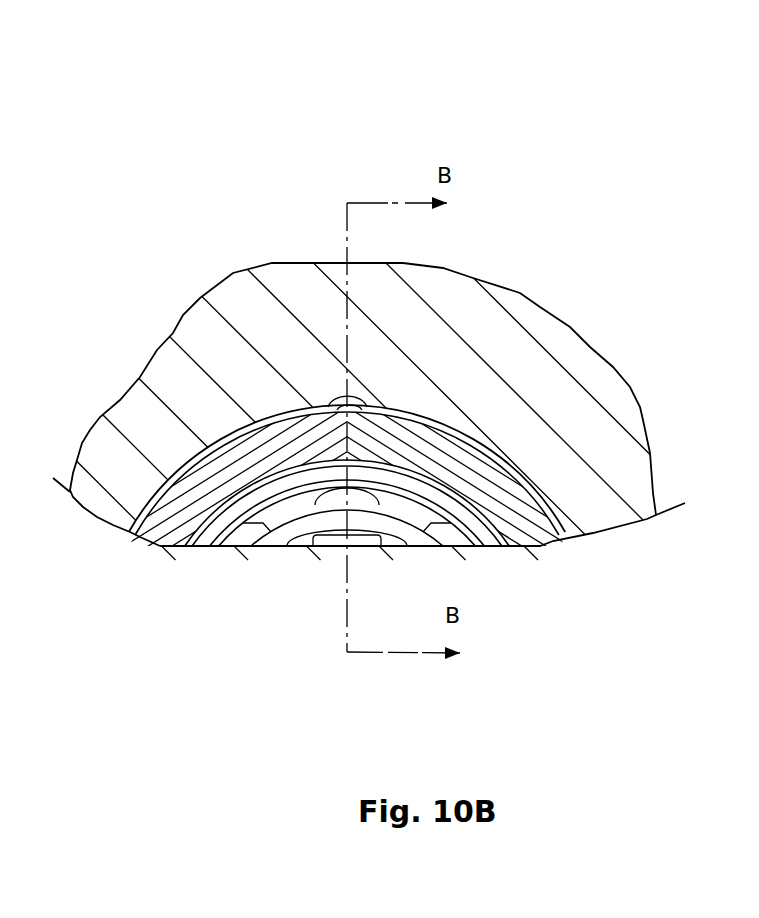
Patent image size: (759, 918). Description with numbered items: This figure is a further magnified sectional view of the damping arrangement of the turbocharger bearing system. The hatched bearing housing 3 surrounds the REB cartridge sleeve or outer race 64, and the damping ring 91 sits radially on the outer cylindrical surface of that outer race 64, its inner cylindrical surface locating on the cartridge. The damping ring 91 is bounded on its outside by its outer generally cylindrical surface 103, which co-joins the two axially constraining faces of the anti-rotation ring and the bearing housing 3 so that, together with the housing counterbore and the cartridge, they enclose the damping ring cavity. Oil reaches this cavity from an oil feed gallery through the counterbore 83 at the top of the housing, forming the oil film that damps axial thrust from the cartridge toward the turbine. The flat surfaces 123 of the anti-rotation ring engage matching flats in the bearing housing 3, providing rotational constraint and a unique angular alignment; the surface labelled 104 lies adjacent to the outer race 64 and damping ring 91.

The bearing housing 3 is at (478, 340).
The REB cartridge sleeve or outer race 64 is at (0, 572).
The counterbore 83 is at (338, 403).
The damping ring 91 is at (503, 498).
The outer generally cylindrical surface of the damping ring 103 is at (301, 400).
The outer surface of race 104 is at (189, 435).
The flat surfaces 123 is at (357, 487).